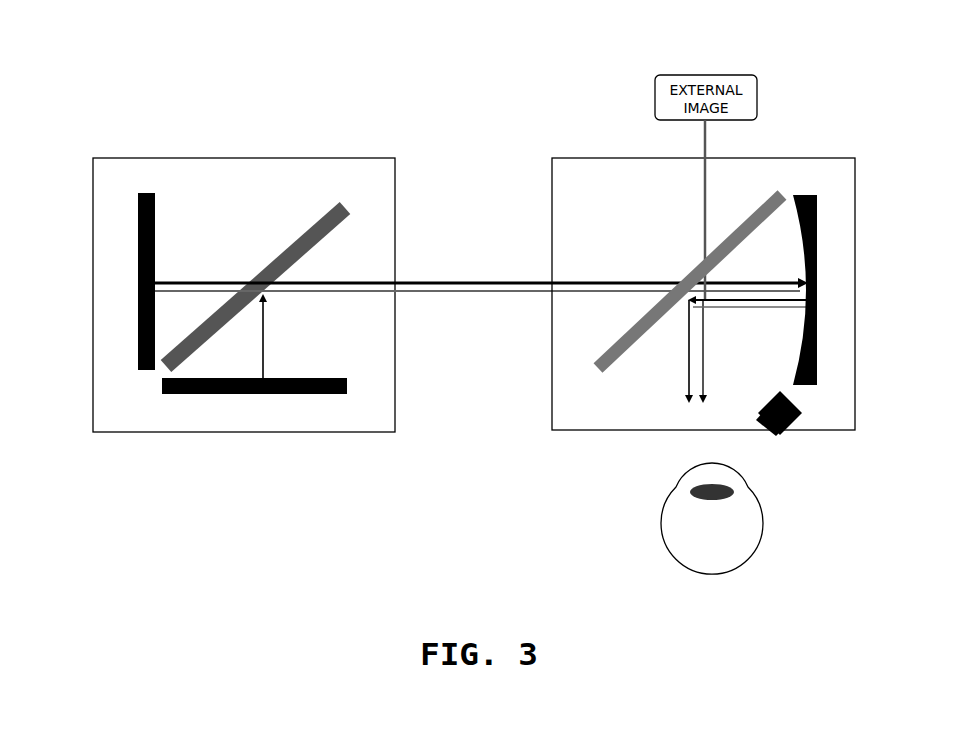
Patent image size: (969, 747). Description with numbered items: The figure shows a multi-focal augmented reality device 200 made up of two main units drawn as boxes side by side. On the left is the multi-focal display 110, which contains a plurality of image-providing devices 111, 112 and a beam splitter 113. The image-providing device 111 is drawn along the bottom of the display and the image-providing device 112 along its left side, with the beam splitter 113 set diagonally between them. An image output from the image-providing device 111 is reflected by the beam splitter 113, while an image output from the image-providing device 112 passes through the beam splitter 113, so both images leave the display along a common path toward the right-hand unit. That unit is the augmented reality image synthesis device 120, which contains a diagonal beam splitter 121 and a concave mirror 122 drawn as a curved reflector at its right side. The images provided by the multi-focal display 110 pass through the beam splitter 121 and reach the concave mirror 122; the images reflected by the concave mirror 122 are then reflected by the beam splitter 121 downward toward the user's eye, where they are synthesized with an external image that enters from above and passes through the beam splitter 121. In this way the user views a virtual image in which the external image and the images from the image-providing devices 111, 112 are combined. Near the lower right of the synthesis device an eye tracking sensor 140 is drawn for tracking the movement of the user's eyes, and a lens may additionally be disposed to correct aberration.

The multi-focal augmented reality device 200 is at (475, 24).
The multi-focal display 110 is at (195, 157).
The image-providing device 111 is at (263, 396).
The image-providing device 112 is at (138, 325).
The beam splitter 113 is at (296, 236).
The augmented reality image synthesis device 120 is at (576, 157).
The beam splitter 121 is at (695, 275).
The concave mirror 122 is at (817, 210).
The eye tracking sensor 140 is at (797, 428).